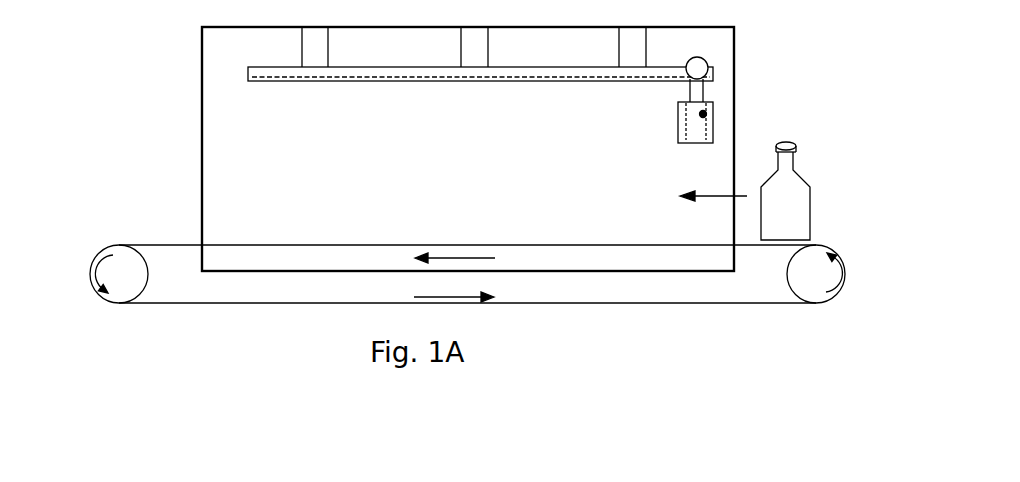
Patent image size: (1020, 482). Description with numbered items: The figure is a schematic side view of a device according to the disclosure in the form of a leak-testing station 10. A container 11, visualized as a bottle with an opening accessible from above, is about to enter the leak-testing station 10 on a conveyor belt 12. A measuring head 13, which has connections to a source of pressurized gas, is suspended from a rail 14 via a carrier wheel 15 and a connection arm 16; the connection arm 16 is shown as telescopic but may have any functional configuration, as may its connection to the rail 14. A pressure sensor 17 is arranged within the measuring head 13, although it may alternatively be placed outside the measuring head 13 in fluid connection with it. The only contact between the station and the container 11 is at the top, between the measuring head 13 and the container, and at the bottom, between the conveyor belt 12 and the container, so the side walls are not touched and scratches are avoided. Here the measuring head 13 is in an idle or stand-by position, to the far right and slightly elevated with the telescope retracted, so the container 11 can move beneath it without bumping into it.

The leak-testing station 10 is at (150, 79).
The container 11 is at (790, 191).
The conveyor belt 12 is at (655, 303).
The measuring head 13 is at (708, 135).
The rail 14 is at (402, 67).
The carrier wheel 15 is at (702, 66).
The connection arm 16 is at (699, 90).
The pressure sensor 17 is at (703, 116).